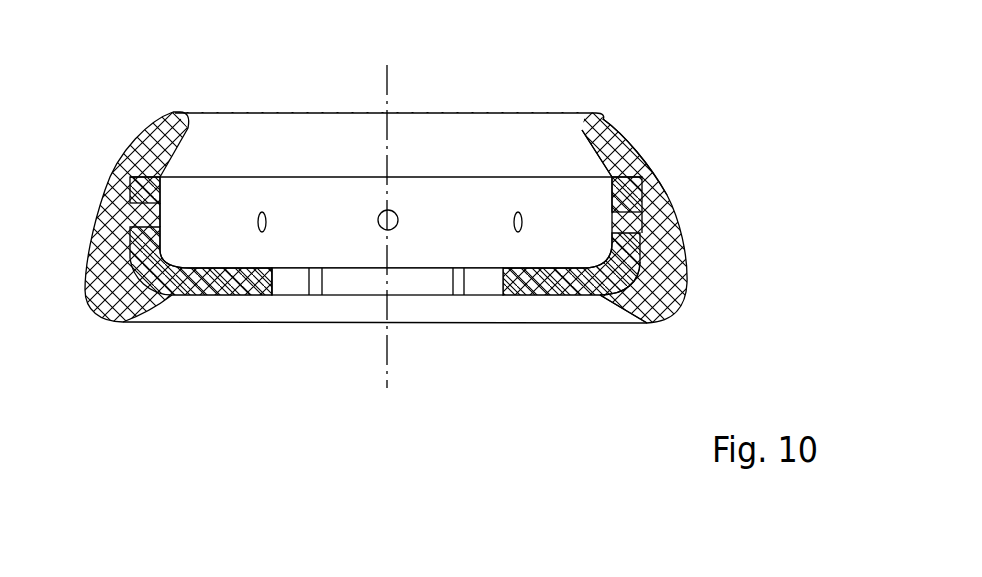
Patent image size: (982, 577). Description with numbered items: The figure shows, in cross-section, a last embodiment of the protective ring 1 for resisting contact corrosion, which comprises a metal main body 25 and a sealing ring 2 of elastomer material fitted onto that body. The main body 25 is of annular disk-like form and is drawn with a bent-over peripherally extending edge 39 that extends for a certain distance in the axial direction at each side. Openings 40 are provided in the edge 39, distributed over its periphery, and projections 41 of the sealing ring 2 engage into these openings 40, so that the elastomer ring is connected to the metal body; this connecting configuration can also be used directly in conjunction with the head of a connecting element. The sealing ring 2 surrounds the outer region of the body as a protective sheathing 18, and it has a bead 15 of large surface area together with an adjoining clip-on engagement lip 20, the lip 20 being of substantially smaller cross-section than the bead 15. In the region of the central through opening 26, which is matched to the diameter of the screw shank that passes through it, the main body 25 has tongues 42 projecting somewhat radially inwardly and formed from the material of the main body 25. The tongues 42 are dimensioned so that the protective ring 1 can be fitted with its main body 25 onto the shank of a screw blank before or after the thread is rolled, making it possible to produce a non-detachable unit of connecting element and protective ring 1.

The protective ring 1 is at (667, 116).
The sealing ring 2 is at (663, 207).
The bead 15 is at (657, 320).
The protective sheathing 18 is at (625, 147).
The clip-on engagement lip 20 is at (617, 300).
The main body 25 is at (550, 282).
The through opening 26 is at (292, 285).
The bent-over peripherally extending edge 39 is at (622, 197).
The openings 40 is at (516, 212).
The projections 41 is at (387, 211).
The tongues 42 is at (350, 283).